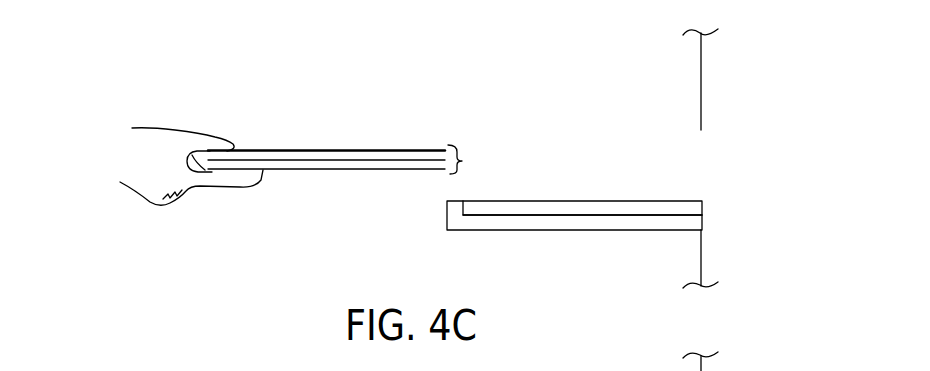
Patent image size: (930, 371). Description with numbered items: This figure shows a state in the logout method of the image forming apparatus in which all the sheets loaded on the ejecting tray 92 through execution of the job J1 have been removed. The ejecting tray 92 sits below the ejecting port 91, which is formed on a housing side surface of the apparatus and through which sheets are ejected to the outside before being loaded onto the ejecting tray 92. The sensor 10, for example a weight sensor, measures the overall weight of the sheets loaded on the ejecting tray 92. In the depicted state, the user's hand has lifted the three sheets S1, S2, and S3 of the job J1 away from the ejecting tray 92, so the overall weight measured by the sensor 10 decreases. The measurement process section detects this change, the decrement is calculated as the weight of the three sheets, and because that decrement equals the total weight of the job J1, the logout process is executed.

The sheet S1 is at (355, 169).
The sheet S2 is at (337, 160).
The sheet S3 is at (297, 150).
The job J1 is at (462, 161).
The sensor 10 is at (615, 207).
The ejecting port 91 is at (717, 158).
The ejecting tray 92 is at (480, 230).